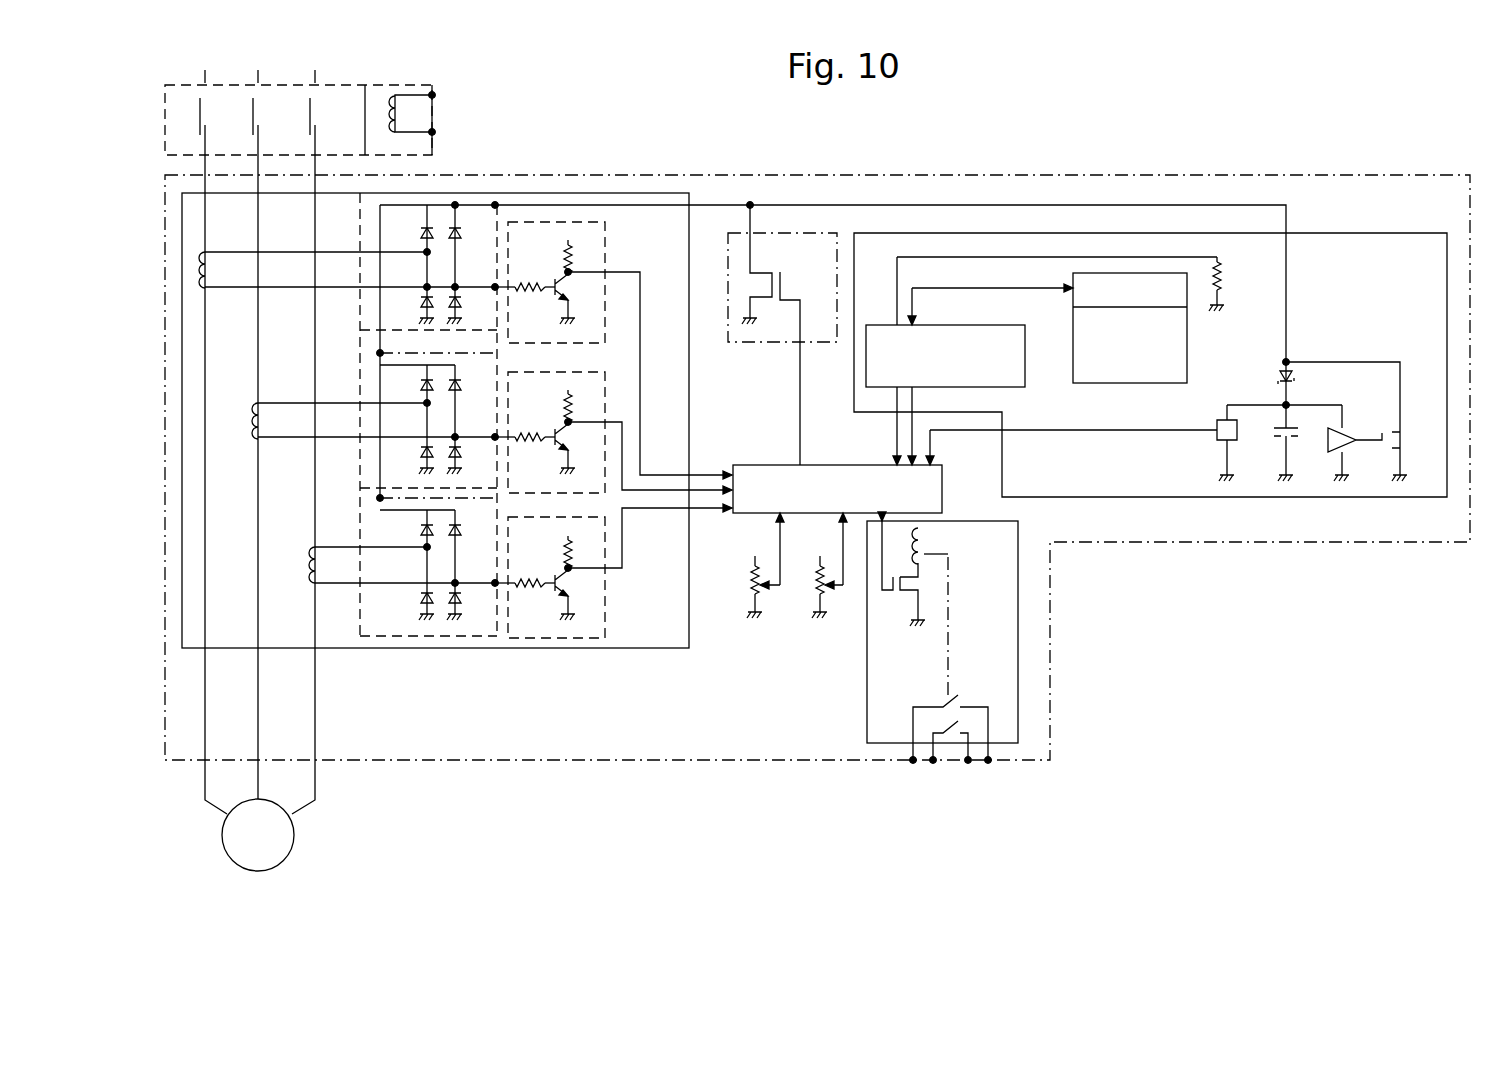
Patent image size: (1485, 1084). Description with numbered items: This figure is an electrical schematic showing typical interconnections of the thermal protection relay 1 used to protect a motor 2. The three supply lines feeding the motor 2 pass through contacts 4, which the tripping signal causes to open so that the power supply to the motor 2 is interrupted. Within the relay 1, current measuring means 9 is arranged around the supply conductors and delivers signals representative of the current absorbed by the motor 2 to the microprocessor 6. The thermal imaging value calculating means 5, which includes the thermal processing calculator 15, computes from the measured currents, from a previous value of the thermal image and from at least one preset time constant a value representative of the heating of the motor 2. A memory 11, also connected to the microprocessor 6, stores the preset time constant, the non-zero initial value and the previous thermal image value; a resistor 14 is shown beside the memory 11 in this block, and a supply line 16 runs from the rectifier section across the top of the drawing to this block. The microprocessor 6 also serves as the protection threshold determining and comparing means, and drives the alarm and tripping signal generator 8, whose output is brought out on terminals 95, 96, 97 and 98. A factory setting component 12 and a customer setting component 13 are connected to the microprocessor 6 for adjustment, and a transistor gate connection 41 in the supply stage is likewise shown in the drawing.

The thermal protection relay 1 is at (1050, 597).
The motor 2 is at (294, 826).
The contacts 4 is at (783, 335).
The thermal value calculator 5 is at (1150, 350).
The microprocessor 6 is at (742, 465).
The alarm/tripping signal generator 8 is at (927, 651).
The current measuring means 9 is at (689, 283).
The memory 11 is at (1190, 326).
The factory setting component 12 is at (732, 611).
The customer setting component 13 is at (806, 620).
The resistor 14 is at (1222, 285).
The thermal processing calculator 15 is at (975, 325).
The supply line 16 is at (1082, 205).
The transistor gate connection 41 is at (783, 287).
The relay output terminal 95 is at (938, 774).
The relay output terminal 96 is at (967, 774).
The relay output terminal 97 is at (912, 774).
The relay output terminal 98 is at (993, 774).